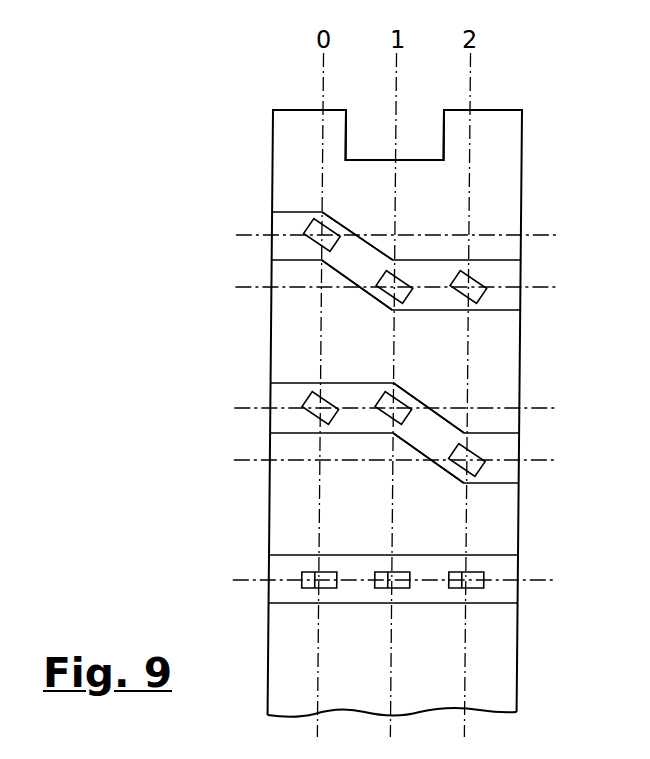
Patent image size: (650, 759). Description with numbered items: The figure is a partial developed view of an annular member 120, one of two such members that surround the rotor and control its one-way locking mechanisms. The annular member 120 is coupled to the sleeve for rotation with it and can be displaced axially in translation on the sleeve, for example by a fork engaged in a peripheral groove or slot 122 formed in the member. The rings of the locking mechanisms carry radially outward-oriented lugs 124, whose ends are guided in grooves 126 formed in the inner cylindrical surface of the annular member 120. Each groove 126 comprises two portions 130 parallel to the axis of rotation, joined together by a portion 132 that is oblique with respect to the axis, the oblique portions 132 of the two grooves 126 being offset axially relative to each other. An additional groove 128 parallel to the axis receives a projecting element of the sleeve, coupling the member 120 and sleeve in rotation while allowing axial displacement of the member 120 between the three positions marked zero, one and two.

The annular member 120 is at (532, 179).
The peripheral groove or slot 122 is at (347, 133).
The lug 124 is at (305, 225).
The groove 126 is at (281, 248).
The additional groove 128 is at (277, 569).
The portion parallel to the axis 130 is at (294, 211).
The oblique portion 132 is at (348, 224).